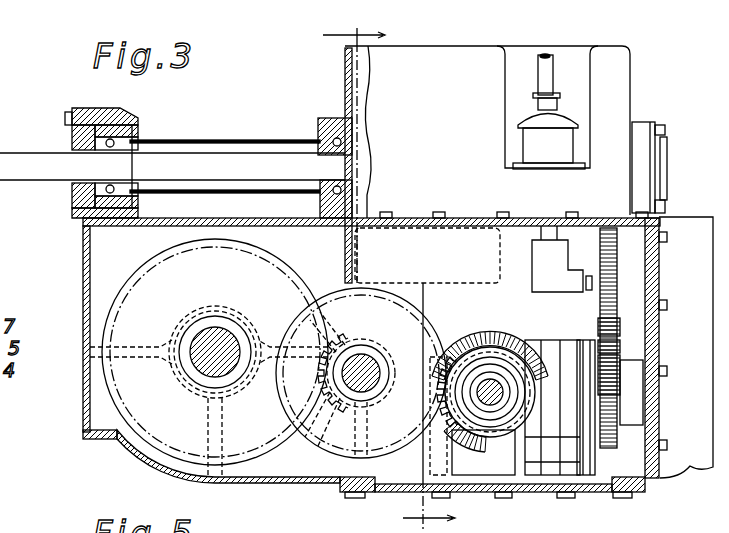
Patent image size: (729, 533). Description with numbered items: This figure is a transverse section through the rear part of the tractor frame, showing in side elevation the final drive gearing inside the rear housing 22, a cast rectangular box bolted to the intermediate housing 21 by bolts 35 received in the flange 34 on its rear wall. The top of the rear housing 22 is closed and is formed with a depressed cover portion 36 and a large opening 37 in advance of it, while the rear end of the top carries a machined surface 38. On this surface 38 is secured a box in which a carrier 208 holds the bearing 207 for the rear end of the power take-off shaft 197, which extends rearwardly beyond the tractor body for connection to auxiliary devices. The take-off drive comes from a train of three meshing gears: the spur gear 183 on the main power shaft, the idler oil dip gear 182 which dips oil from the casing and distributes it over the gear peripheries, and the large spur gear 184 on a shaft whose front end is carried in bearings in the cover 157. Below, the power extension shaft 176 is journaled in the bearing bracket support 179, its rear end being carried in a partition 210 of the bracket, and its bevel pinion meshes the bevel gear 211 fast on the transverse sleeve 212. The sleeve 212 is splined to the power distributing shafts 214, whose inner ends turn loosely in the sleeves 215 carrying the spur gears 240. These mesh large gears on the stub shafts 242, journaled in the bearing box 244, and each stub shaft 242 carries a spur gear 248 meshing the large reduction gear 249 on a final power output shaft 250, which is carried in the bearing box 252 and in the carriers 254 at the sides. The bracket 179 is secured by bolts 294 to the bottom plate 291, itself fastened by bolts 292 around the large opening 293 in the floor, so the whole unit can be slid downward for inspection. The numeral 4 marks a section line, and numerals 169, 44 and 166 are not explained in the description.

The carrier 208 is at (108, 107).
The bearing 207 is at (128, 135).
The power take-off shaft 197 is at (293, 163).
The machined surface 38 is at (87, 212).
The solenoid plunger 169 is at (548, 72).
The cover 157 is at (618, 82).
The section line 4 is at (384, 280).
The large opening 37 is at (520, 218).
The side wall 44 is at (88, 365).
The rear housing 22 is at (100, 437).
The large reduction gear 249 is at (140, 452).
The large opening 293 is at (366, 506).
The bolts 294 is at (563, 497).
The bottom plate 291 is at (595, 495).
The bolts 292 is at (345, 498).
The bevel gear 211 is at (500, 498).
The flange 34 is at (658, 394).
The intermediate housing 21 is at (686, 347).
The bolts 35 is at (667, 462).
The depressed cover portion 36 is at (430, 282).
The spur gear 240 is at (532, 262).
The contact 166 is at (592, 280).
The large spur gear 184 is at (613, 240).
The spur gear 183 is at (618, 327).
The idler gear 182 is at (620, 345).
The power extension shaft 176 is at (620, 375).
The partition 210 is at (552, 455).
The bearing box 252 is at (200, 305).
The carriers 254 is at (170, 367).
The final power output shafts 250 is at (213, 370).
The spur gear 248 is at (330, 460).
The bearing box 244 is at (428, 420).
The stub shaft 242 is at (383, 355).
The bearing bracket support 179 is at (440, 455).
The sleeve 212 is at (508, 389).
The power distributing shafts 214 is at (471, 345).
The sleeves 215 is at (498, 378).